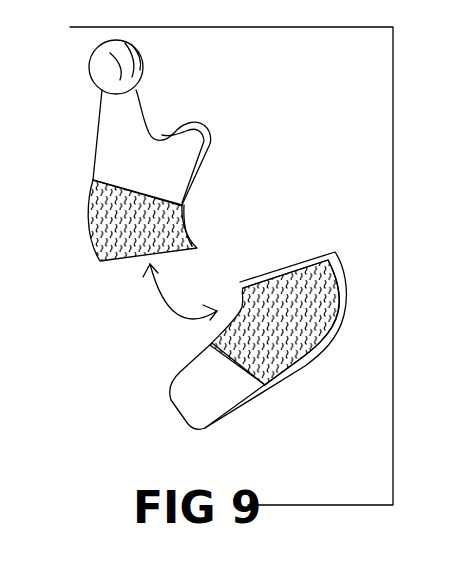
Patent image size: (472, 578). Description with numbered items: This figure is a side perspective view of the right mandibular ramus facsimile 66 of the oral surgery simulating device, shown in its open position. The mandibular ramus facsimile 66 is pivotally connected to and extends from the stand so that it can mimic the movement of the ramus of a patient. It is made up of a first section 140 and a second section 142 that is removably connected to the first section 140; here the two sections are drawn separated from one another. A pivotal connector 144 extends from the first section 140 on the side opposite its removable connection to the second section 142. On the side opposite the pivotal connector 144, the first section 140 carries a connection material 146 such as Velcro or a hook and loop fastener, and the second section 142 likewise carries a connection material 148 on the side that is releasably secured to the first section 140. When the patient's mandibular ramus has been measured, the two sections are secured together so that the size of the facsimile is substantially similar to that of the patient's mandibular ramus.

The mandibular ramus facsimile 66 is at (112, 345).
The first section 140 is at (140, 162).
The second section 142 is at (258, 339).
The pivotal connector 144 is at (133, 66).
The connection material 146 is at (97, 247).
The connection material 148 is at (268, 280).